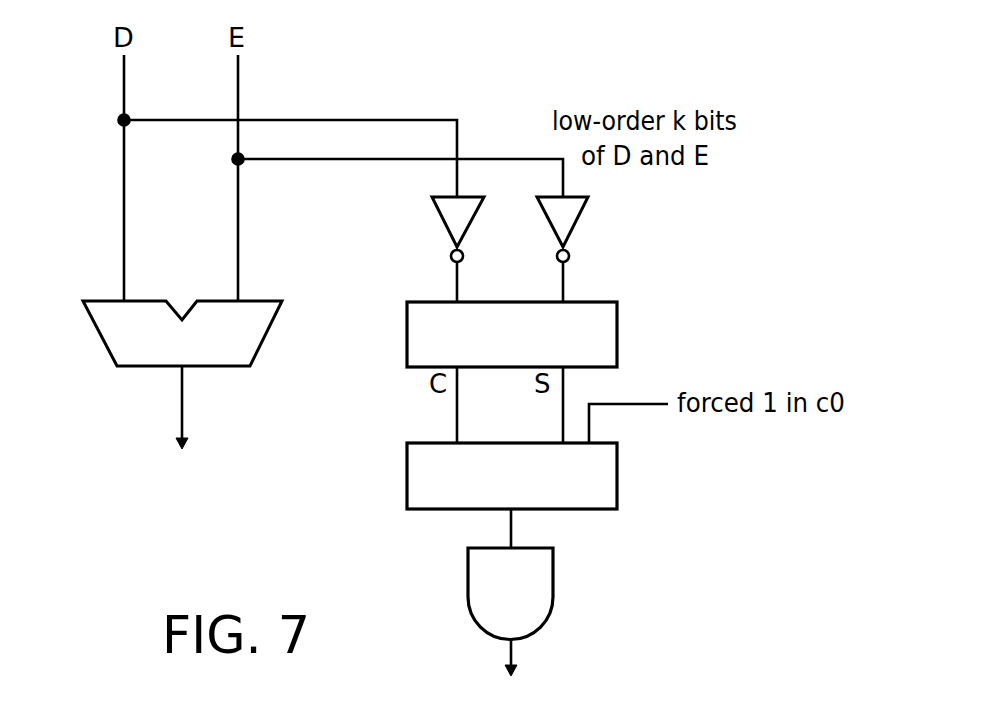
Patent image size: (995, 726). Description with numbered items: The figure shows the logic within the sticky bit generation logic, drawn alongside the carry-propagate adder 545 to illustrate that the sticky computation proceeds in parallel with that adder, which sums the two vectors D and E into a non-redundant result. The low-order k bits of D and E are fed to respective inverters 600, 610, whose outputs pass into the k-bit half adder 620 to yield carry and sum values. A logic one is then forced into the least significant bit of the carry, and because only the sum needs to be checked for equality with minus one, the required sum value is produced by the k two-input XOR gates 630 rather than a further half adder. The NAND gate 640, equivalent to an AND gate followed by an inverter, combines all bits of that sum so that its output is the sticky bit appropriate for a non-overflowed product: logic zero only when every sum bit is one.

The carry-propagate adder 545 is at (100, 334).
The inverter 600 is at (437, 216).
The inverter 610 is at (584, 216).
The k-bit half adder logic 620 is at (407, 320).
The two-input XOR gates 630 is at (407, 462).
The NAND gate 640 is at (556, 565).